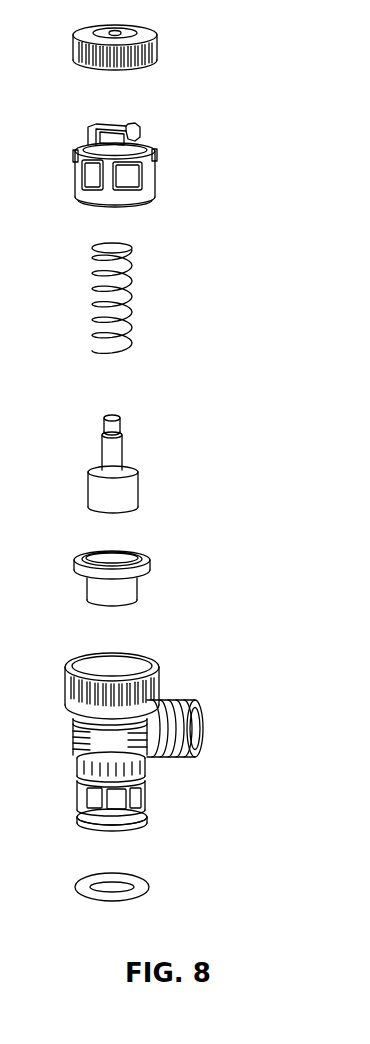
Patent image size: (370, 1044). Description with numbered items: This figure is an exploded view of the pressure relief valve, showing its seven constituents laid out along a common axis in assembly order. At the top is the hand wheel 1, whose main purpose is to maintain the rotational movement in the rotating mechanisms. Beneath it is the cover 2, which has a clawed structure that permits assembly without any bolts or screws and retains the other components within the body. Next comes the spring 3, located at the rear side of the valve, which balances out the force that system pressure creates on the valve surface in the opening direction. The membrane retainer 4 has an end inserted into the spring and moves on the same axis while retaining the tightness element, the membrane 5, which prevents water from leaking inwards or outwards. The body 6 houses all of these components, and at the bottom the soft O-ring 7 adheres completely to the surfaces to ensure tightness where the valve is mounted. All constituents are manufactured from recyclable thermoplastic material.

The hand wheel 1 is at (157, 50).
The cover 2 is at (147, 173).
The spring 3 is at (133, 301).
The membrane retainer 4 is at (122, 458).
The membrane 5 is at (137, 593).
The body 6 is at (160, 729).
The O-ring 7 is at (149, 886).